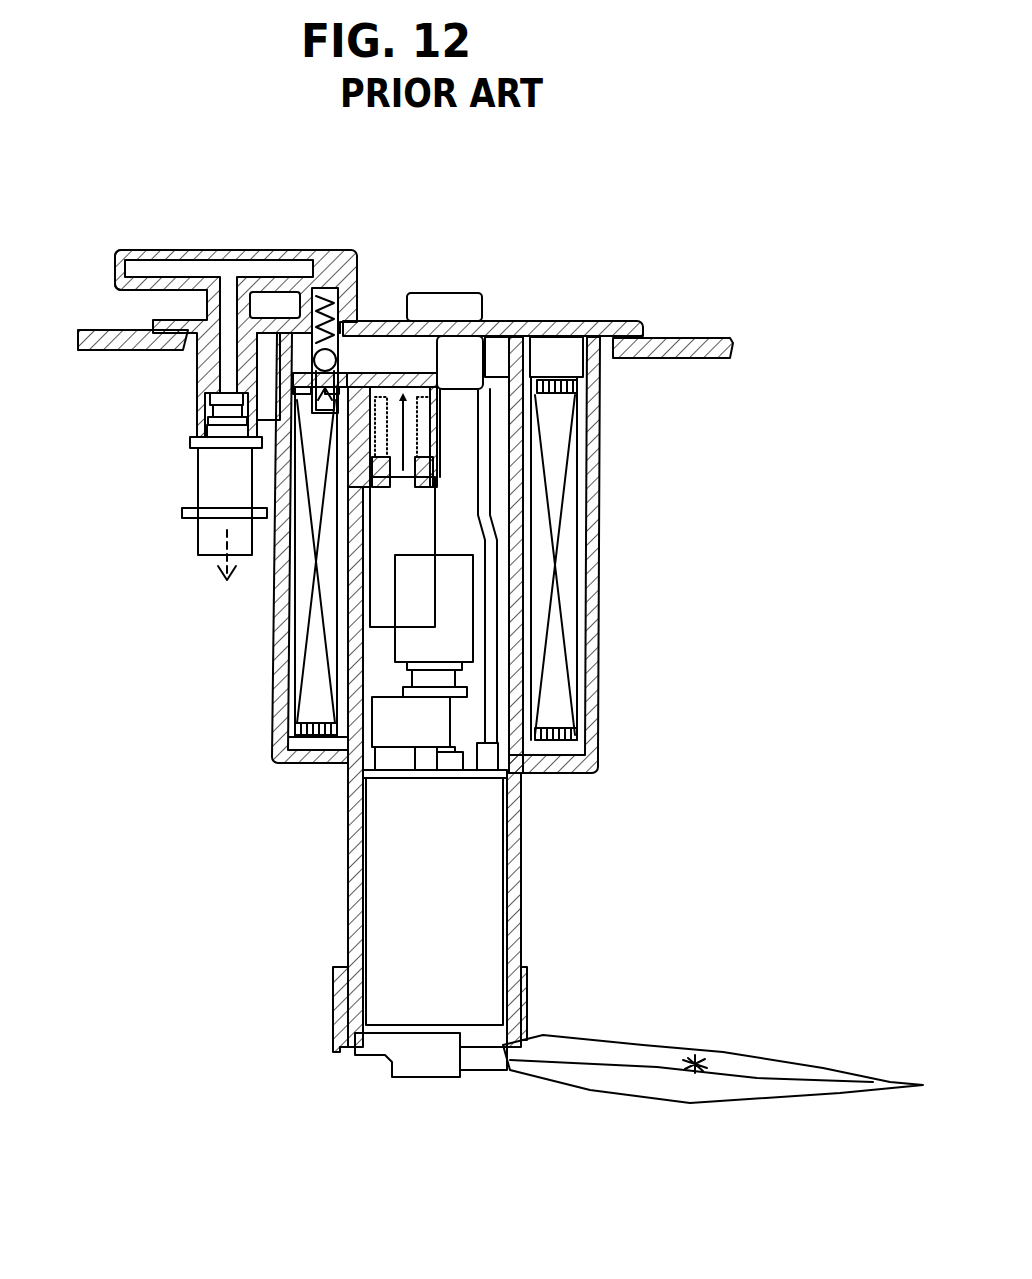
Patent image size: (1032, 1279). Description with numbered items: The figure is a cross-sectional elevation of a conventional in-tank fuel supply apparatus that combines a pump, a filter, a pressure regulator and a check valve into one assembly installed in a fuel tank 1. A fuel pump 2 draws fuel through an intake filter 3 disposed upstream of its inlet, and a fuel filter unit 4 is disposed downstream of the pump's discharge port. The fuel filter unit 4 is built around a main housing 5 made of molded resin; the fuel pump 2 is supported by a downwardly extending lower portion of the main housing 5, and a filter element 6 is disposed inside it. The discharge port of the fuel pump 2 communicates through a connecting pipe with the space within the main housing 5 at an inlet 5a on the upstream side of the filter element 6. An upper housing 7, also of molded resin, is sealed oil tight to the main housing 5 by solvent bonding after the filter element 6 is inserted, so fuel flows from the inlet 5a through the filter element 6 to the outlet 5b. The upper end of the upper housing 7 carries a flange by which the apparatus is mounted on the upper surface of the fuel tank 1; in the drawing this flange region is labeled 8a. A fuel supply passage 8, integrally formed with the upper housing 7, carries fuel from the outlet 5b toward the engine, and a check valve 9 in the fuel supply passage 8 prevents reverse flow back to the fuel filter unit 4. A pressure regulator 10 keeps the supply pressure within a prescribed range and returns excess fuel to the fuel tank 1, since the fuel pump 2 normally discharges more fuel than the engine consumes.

The fuel tank 1 is at (692, 337).
The fuel pump 2 is at (387, 883).
The intake filter 3 is at (640, 1045).
The fuel filter unit 4 is at (603, 470).
The main housing 5 is at (603, 686).
The inlet 5a is at (400, 387).
The outlet 5b is at (305, 512).
The filter element 6 is at (553, 585).
The upper housing 7 is at (508, 321).
The fuel supply passage 8 is at (285, 262).
The bracket flange 8a is at (165, 250).
The check valve 9 is at (352, 315).
The pressure regulator 10 is at (198, 494).